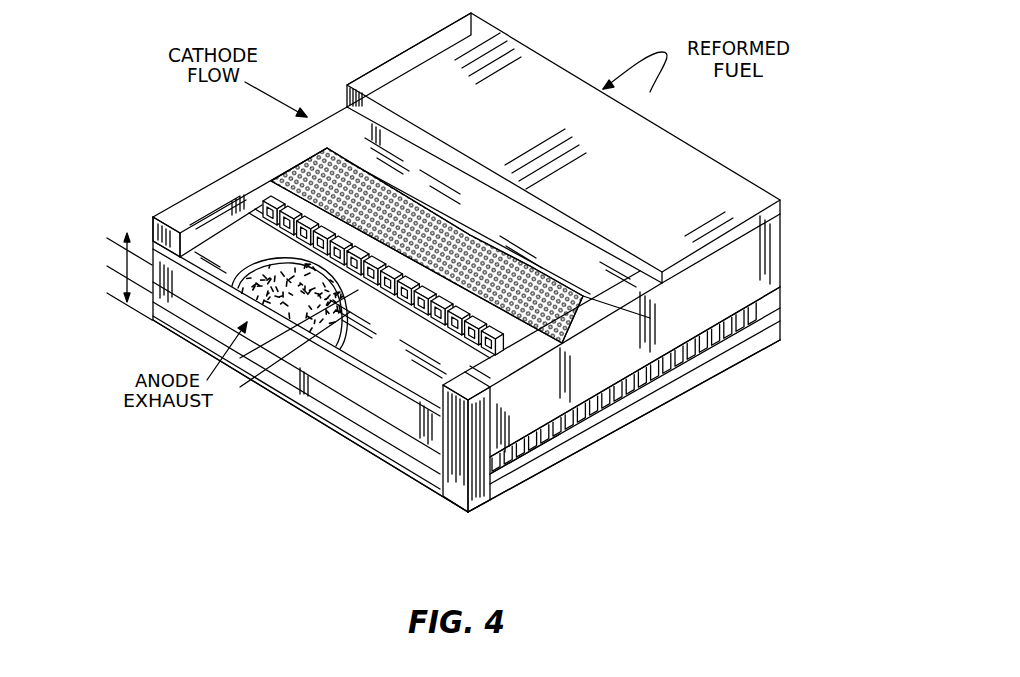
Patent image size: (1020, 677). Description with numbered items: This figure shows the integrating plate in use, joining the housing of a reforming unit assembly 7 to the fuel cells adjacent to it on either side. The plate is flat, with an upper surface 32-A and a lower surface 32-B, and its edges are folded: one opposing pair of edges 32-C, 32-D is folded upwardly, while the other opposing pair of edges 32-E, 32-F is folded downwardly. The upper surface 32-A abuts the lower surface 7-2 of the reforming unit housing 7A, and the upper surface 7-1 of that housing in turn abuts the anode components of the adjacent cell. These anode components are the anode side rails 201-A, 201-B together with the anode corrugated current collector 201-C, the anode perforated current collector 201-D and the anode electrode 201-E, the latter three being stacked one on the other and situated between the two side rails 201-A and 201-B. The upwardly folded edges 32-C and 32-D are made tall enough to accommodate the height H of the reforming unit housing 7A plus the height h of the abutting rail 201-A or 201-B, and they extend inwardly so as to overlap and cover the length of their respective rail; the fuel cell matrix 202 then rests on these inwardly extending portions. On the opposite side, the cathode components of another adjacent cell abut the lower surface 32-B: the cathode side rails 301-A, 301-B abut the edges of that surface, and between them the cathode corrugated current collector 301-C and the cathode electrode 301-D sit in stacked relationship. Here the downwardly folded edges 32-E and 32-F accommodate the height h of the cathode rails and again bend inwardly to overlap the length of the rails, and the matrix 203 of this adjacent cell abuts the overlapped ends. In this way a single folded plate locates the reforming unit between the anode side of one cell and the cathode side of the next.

The reforming unit assembly 7 is at (227, 310).
The reforming unit housing 7A is at (200, 295).
The upper surface of reforming unit housing 7-1 is at (303, 387).
The lower surface of reforming unit housing 7-2 is at (343, 448).
The upper surface of plate 32-A is at (350, 398).
The lower surface of plate 32-B is at (437, 457).
The upwardly folded edge 32-C is at (277, 153).
The upwardly folded edge 32-D is at (777, 233).
The downwardly folded edge 32-E is at (397, 440).
The downwardly folded edge 32-F is at (787, 290).
The anode side rail 201-A is at (448, 455).
The anode side rail 201-B is at (157, 237).
The anode corrugated current collector 201-C is at (270, 197).
The anode perforated current collector 201-D is at (390, 197).
The anode electrode 201-E is at (383, 143).
The fuel cell matrix 202 is at (683, 147).
The matrix 203 is at (622, 415).
The cathode side rail 301-A is at (486, 477).
The cathode side rail 301-B is at (767, 307).
The cathode corrugated current collector 301-C is at (733, 333).
The cathode electrode 301-D is at (670, 380).
The height of rails h is at (132, 276).
The height of reforming unit housing H is at (146, 293).